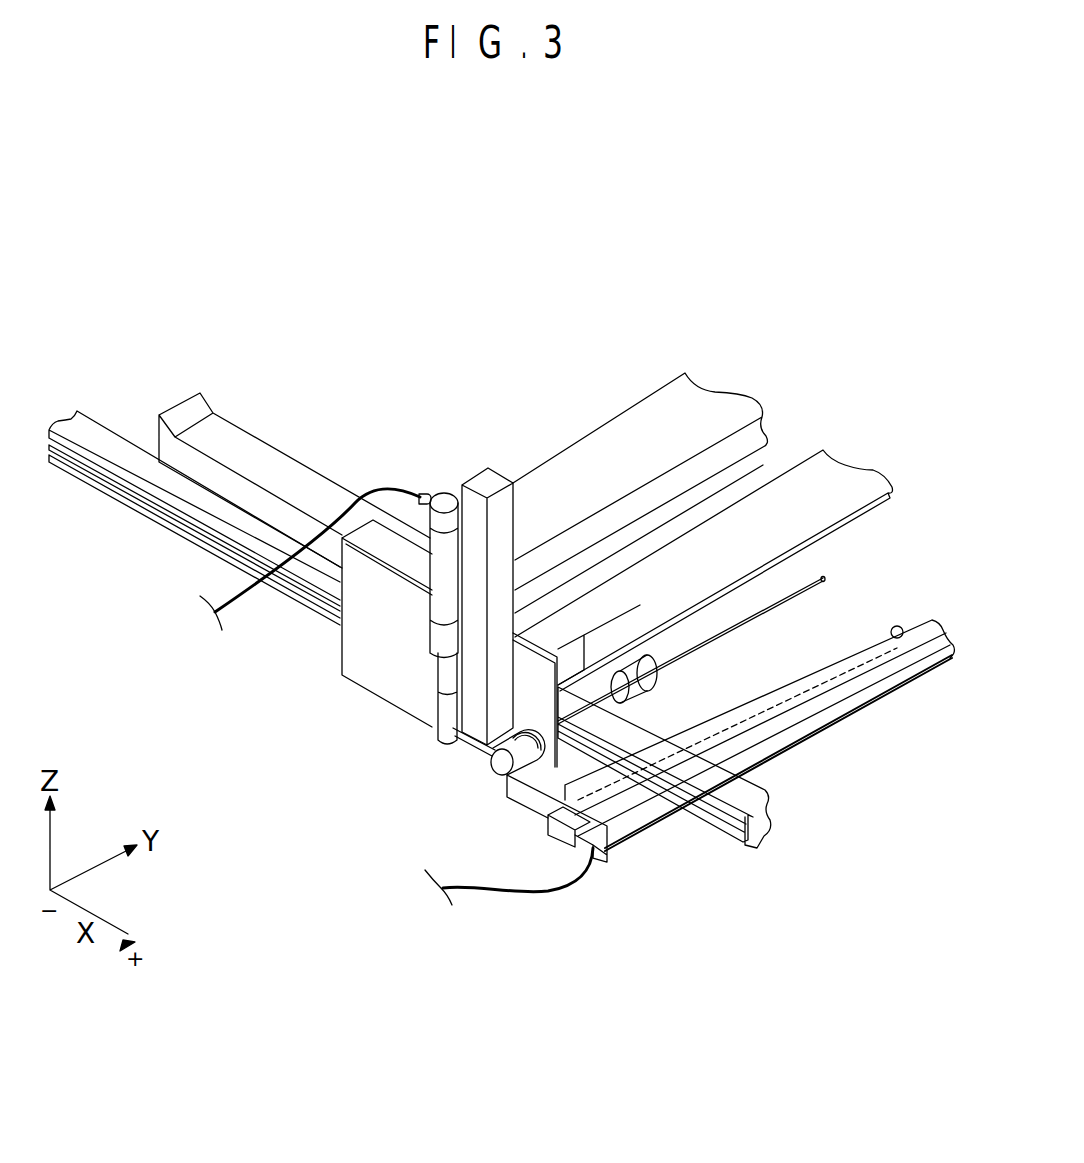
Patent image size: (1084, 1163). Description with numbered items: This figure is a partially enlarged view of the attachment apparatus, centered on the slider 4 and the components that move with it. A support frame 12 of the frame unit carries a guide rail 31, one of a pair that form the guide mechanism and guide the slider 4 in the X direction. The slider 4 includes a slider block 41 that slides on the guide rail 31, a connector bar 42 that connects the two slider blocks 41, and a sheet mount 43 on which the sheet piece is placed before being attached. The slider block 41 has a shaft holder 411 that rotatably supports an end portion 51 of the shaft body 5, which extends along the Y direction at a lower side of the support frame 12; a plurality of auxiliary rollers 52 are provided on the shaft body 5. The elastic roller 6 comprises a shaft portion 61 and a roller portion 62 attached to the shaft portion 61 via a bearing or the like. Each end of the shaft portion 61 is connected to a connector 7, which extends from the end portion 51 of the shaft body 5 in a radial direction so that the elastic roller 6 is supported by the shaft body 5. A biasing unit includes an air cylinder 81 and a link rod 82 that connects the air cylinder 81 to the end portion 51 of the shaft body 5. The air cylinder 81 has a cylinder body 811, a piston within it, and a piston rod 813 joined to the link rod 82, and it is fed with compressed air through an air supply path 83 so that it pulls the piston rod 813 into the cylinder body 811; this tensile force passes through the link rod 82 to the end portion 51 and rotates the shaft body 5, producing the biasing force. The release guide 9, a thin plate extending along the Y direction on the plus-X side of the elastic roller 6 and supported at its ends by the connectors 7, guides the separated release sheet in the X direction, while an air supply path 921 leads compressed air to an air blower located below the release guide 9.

The slider 4 is at (762, 368).
The shaft body 5 is at (757, 620).
The elastic roller 6 is at (893, 630).
The connector 7 is at (525, 800).
The release guide 9 is at (887, 688).
The support frame 12 is at (107, 443).
The guide rail 31 is at (120, 488).
The slider block 41 is at (530, 667).
The connector bar 42 is at (835, 487).
The sheet mount 43 is at (247, 455).
The end portion 51 is at (502, 768).
The auxiliary roller 52 is at (640, 672).
The shaft portion 61 is at (551, 836).
The roller portion 62 is at (847, 637).
The air cylinder 81 is at (440, 486).
The link rod 82 is at (458, 750).
The air supply path 83 is at (387, 490).
The shaft holder 411 is at (533, 728).
The cylinder body 811 is at (433, 635).
The piston rod 813 is at (443, 680).
The air supply path 921 is at (520, 893).